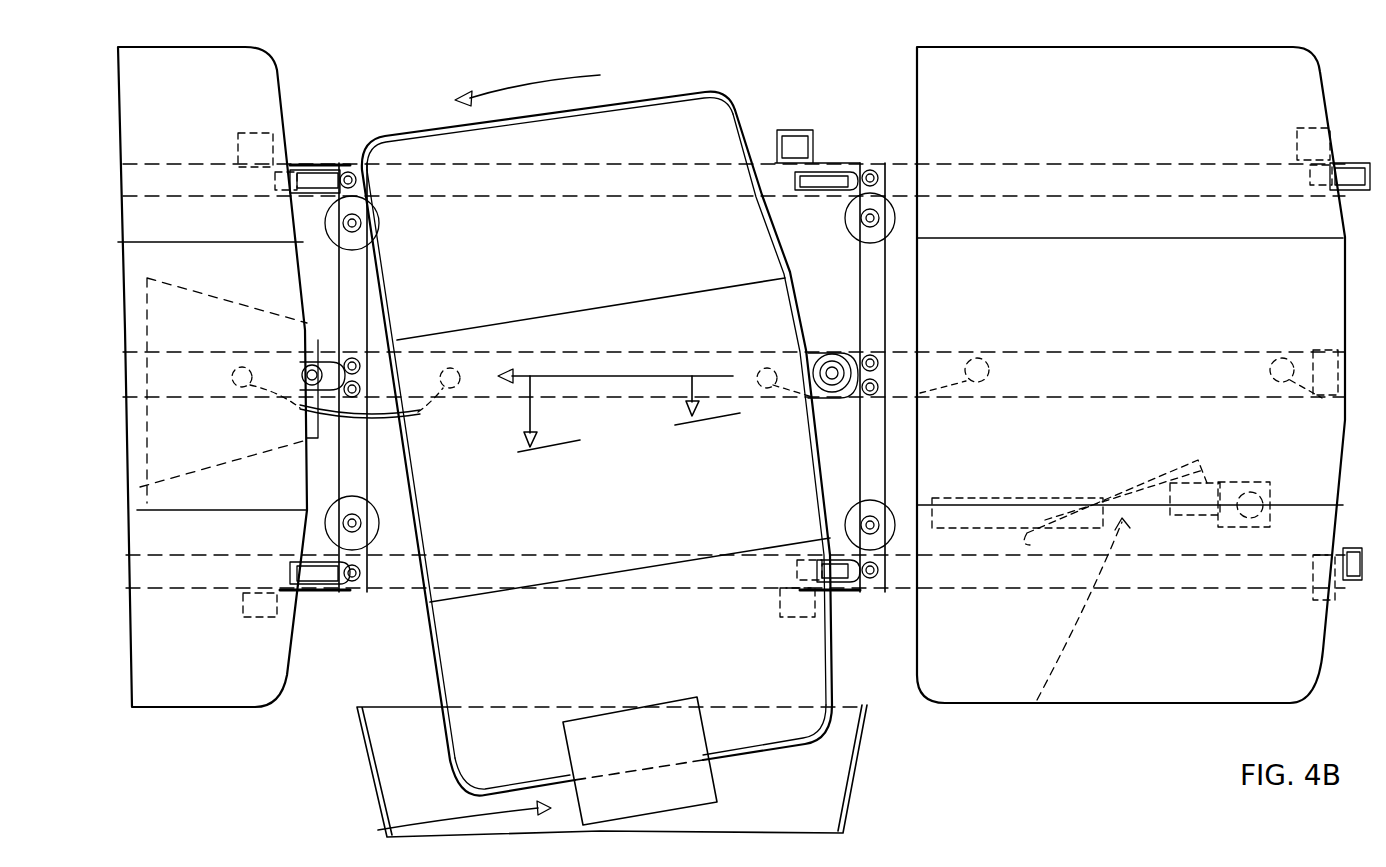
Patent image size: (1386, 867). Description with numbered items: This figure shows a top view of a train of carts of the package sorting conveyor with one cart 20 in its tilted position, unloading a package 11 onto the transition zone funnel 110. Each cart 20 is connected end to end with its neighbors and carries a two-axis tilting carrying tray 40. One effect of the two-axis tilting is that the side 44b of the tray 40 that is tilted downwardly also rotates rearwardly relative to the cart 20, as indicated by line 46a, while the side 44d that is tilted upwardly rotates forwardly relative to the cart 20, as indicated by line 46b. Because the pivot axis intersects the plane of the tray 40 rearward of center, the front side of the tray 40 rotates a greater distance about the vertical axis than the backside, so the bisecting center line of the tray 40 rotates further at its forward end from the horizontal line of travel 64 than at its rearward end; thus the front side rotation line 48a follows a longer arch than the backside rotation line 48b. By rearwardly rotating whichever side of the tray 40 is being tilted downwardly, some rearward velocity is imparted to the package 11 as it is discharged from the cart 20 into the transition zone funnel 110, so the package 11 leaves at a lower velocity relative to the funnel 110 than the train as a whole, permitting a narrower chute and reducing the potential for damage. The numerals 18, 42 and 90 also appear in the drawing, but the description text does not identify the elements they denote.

The package 11 is at (693, 795).
The base support 18 is at (432, 796).
The cart 20 is at (601, 411).
The carrying tray 40 is at (656, 514).
The panel section 42 is at (570, 241).
The side of the tray 44b is at (775, 750).
The side of the tray 44d is at (418, 135).
The line 46a is at (434, 821).
The line 46b is at (518, 83).
The front side rotation line 48a is at (525, 410).
The backside rotation line 48b is at (695, 390).
The horizontal line of travel 64 is at (642, 376).
The latch mechanism 90 is at (1076, 634).
The transition zone funnel 110 is at (228, 298).